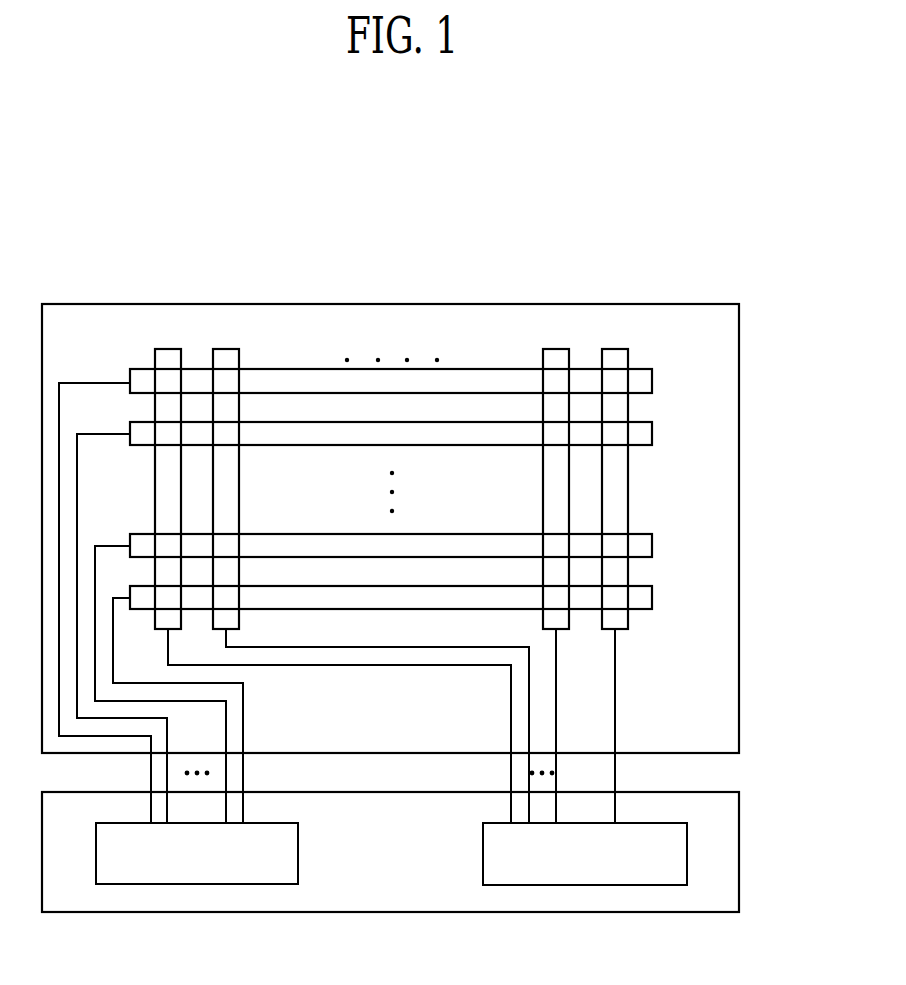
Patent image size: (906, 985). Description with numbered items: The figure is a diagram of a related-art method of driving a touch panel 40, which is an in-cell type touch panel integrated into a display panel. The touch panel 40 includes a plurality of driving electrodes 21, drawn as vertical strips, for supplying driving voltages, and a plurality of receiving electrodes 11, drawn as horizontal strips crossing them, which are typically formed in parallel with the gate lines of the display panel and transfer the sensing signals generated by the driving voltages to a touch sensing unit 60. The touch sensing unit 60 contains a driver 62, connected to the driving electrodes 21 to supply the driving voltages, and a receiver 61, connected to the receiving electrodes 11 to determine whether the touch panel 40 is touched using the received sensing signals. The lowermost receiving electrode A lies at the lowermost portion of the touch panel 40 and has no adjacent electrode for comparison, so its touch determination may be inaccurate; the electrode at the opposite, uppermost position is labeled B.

The receiving electrodes 11 is at (460, 492).
The driving electrodes 21 is at (620, 347).
The touch panel 40 is at (753, 490).
The touch sensing unit 60 is at (742, 856).
The receiver 61 is at (180, 866).
The driver 62 is at (568, 866).
The lowermost receiving electrode A is at (652, 590).
The first electrode line B is at (652, 376).